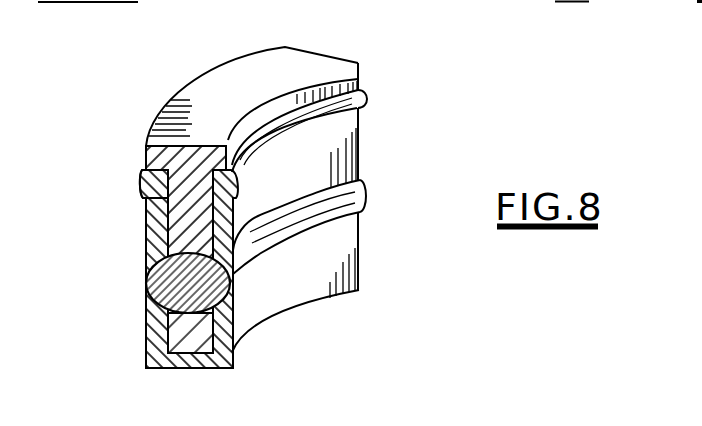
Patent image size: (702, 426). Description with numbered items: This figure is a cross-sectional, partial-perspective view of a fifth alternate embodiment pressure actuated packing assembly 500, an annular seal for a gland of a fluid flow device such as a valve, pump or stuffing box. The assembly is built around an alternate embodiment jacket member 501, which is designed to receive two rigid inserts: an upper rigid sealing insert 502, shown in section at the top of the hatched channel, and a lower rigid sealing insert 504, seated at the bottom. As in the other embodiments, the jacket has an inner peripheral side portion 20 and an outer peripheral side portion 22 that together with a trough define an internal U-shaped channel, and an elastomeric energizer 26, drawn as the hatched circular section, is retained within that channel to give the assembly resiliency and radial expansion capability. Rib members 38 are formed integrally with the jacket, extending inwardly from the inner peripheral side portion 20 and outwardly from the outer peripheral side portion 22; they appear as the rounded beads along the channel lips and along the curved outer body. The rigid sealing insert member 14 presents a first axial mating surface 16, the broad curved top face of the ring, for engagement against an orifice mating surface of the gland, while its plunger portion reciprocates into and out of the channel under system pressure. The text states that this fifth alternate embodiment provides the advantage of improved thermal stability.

The rigid sealing insert member 14 is at (273, 93).
The first axial mating surface 16 is at (302, 64).
The inner peripheral side portion 20 is at (327, 150).
The outer peripheral side portion 22 is at (143, 227).
The elastomeric energizer 26 is at (163, 284).
The rib members 38 is at (369, 99).
The fifth alternate embodiment pressure actuated packing assembly 500 is at (167, 281).
The alternate embodiment jacket member 501 is at (332, 250).
The upper rigid sealing insert 502 is at (187, 205).
The lower rigid sealing insert 504 is at (197, 338).